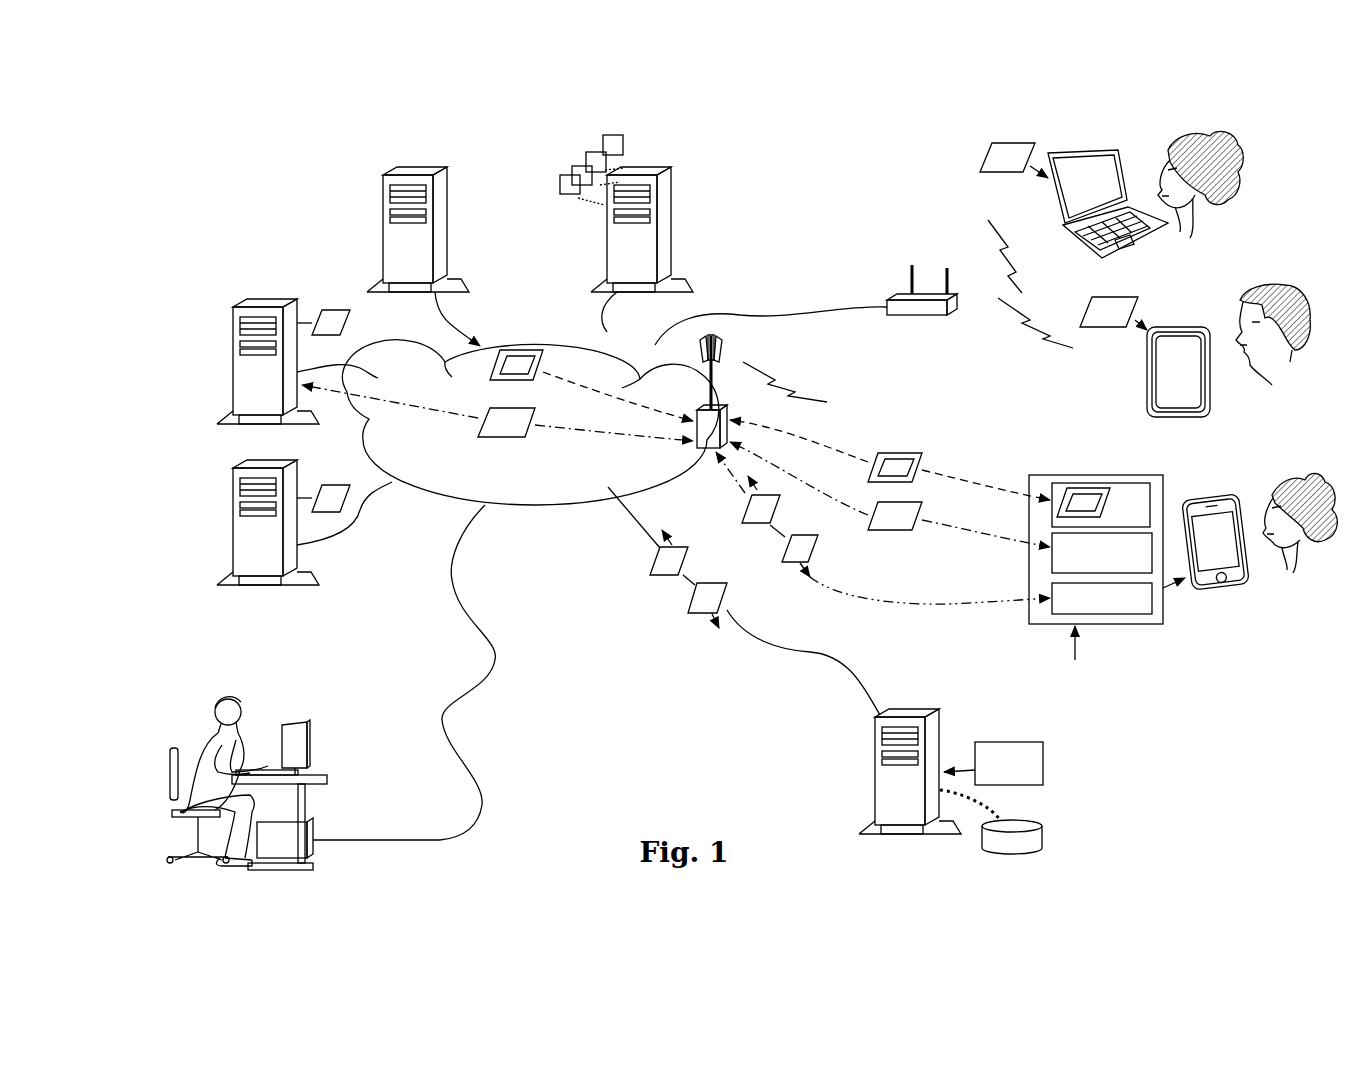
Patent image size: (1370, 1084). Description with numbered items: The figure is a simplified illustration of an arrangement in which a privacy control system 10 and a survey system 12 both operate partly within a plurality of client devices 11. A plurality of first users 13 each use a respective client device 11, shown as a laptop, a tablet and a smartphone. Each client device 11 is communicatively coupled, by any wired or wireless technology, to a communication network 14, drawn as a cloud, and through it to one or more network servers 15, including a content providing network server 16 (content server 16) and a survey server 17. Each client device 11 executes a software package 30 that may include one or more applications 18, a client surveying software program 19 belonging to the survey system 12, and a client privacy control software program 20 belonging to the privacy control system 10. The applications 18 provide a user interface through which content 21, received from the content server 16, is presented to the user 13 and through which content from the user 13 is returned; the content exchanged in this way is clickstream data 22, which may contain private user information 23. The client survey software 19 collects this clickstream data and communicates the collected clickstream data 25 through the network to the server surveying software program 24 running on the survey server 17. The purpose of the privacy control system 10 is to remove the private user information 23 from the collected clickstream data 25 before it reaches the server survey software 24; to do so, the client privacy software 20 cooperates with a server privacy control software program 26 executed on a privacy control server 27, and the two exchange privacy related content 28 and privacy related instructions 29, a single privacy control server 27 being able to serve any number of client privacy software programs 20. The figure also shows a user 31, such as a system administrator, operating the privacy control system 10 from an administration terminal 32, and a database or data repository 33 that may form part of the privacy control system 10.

The privacy control system 10 is at (1082, 605).
The client device 11 is at (1048, 196).
The survey system 12 is at (233, 538).
The first user 13 is at (1192, 240).
The communication network 14 is at (530, 507).
The network server 15 is at (610, 500).
The content providing network server 16 is at (447, 252).
The survey server 17 is at (610, 446).
The application 18 is at (1050, 512).
The client surveying software program 19 is at (1050, 558).
The client privacy control software program 20 is at (1050, 607).
The content 21 is at (604, 137).
The clickstream data 22 is at (815, 403).
The private user information 23 is at (516, 350).
The server surveying software program 24 is at (330, 310).
The collected clickstream data 25 is at (487, 440).
The server privacy control software program 26 is at (1043, 762).
The privacy control server 27 is at (940, 710).
The privacy related content 28 is at (780, 505).
The privacy related instructions 29 is at (782, 548).
The software package 30 is at (978, 162).
The user 31 is at (228, 698).
The administration terminal 32 is at (318, 826).
The database 33 is at (1035, 828).